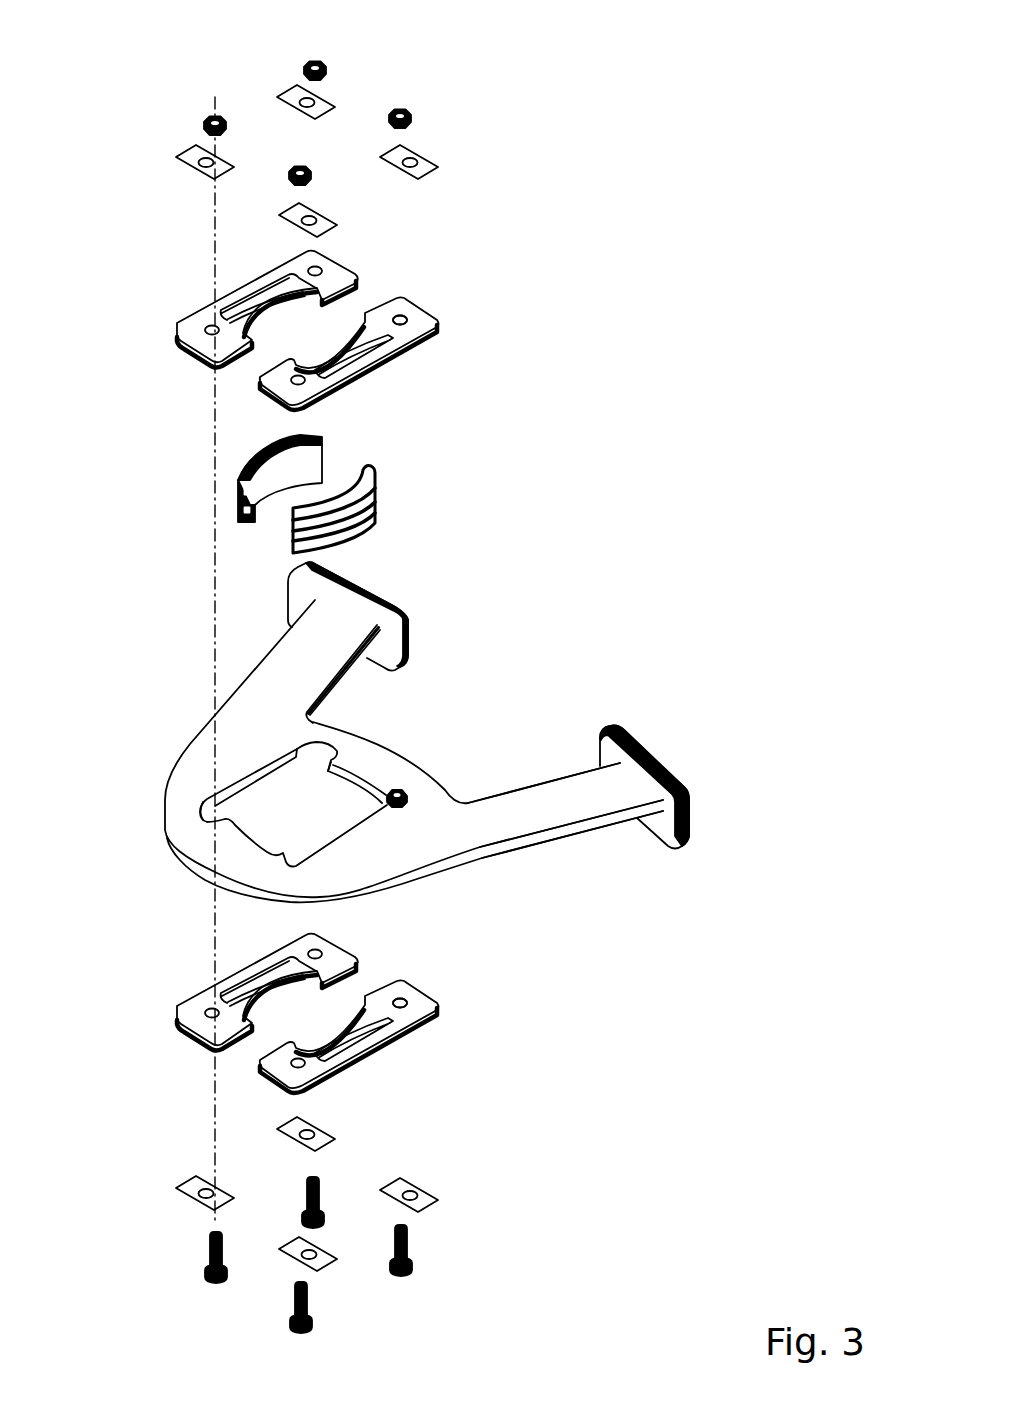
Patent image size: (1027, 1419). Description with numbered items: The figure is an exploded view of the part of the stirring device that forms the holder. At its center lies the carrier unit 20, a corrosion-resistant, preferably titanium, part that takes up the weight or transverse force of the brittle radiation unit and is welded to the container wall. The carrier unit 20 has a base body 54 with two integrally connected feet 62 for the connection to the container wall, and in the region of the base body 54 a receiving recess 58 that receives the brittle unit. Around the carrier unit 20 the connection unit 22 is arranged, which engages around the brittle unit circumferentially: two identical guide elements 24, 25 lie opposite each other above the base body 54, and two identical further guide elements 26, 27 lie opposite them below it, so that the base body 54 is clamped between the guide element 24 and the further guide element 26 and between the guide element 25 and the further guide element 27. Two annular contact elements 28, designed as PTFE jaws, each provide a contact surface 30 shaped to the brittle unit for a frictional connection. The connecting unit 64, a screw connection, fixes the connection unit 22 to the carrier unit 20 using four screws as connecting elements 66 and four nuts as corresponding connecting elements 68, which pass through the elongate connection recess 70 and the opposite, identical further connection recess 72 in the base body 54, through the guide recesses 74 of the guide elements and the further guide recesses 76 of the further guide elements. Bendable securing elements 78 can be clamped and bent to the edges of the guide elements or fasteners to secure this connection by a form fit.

The carrier unit 20 is at (401, 748).
The connection unit 22 is at (297, 309).
The guide element 24 is at (415, 329).
The guide element 25 is at (334, 269).
The further guide element 26 is at (415, 1012).
The further guide element 27 is at (190, 1030).
The contact element 28 is at (378, 491).
The contact surface 30 is at (352, 506).
The base body 54 is at (581, 831).
The receiving recess 58 is at (343, 794).
The foot 62 is at (672, 757).
The connecting unit 64 is at (398, 130).
The connecting element 66 is at (408, 1248).
The corresponding connecting element 68 is at (401, 108).
The connection recess 70 is at (400, 806).
The further connection recess 72 is at (220, 803).
The guide recess 74 is at (412, 318).
The further guide recess 76 is at (410, 1001).
The securing element 78 is at (420, 1192).